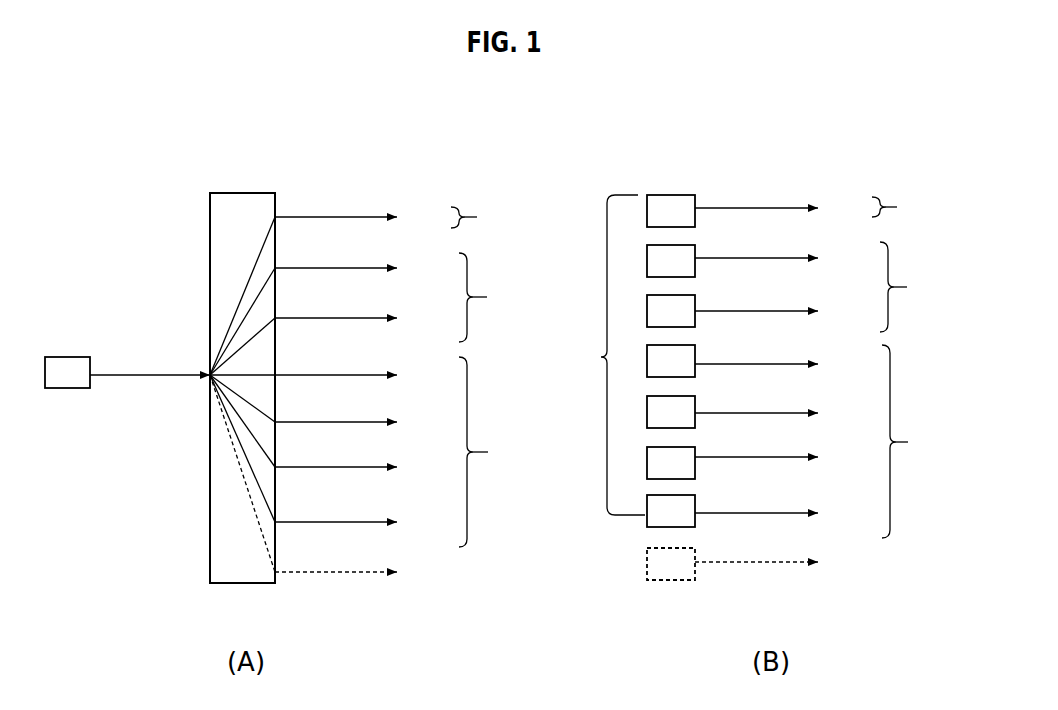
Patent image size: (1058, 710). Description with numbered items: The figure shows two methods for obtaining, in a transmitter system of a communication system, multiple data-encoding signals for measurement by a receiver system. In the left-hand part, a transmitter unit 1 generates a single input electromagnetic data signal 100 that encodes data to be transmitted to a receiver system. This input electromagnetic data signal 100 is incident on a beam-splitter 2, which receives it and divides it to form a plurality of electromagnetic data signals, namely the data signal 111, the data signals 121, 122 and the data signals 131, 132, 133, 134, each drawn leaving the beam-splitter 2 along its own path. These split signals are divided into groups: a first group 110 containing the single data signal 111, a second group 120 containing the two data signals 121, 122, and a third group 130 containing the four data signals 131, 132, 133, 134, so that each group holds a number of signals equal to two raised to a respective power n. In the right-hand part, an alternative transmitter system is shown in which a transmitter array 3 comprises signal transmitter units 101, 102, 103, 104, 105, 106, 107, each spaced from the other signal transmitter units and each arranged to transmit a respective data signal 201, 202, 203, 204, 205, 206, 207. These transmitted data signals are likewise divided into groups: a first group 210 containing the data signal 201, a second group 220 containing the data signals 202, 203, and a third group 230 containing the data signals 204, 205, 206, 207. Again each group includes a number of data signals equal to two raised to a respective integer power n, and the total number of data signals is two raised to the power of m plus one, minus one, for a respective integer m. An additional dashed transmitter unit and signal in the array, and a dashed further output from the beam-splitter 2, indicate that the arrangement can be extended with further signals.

The transmitter unit 1 is at (67, 372).
The beam-splitter 2 is at (211, 186).
The transmitter array 3 is at (601, 357).
The input electromagnetic data signal 100 is at (149, 370).
The group of data signals 110 is at (491, 217).
The data signal 111 is at (326, 291).
The group of data signals 120 is at (497, 297).
The data signal 121 is at (326, 316).
The data signal 122 is at (326, 341).
The group of data signals 130 is at (497, 452).
The data signal 131 is at (326, 375).
The data signal 132 is at (326, 403).
The data signal 133 is at (326, 426).
The data signal 134 is at (326, 453).
The signal transmitter unit 101 is at (671, 211).
The signal transmitter unit 102 is at (671, 261).
The signal transmitter unit 103 is at (671, 311).
The signal transmitter unit 104 is at (671, 361).
The signal transmitter unit 105 is at (671, 412).
The signal transmitter unit 106 is at (671, 463).
The signal transmitter unit 107 is at (671, 511).
The data signal 201 is at (782, 208).
The data signal 202 is at (782, 258).
The data signal 203 is at (782, 311).
The data signal 204 is at (782, 364).
The data signal 205 is at (782, 413).
The data signal 206 is at (782, 457).
The data signal 207 is at (782, 513).
The group of data signals 210 is at (914, 207).
The group of data signals 220 is at (921, 287).
The group of data signals 230 is at (921, 441).